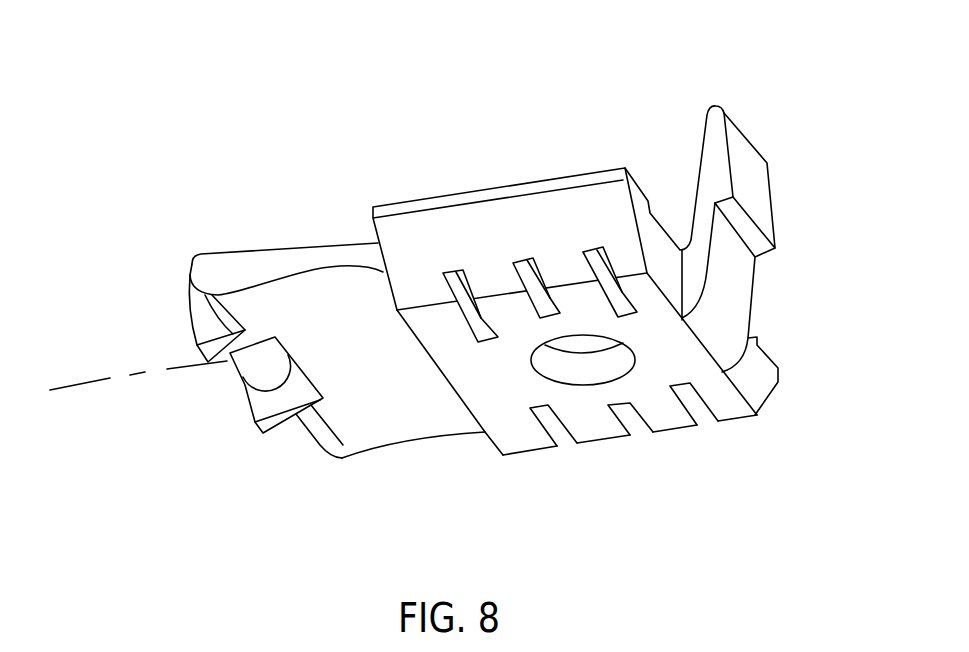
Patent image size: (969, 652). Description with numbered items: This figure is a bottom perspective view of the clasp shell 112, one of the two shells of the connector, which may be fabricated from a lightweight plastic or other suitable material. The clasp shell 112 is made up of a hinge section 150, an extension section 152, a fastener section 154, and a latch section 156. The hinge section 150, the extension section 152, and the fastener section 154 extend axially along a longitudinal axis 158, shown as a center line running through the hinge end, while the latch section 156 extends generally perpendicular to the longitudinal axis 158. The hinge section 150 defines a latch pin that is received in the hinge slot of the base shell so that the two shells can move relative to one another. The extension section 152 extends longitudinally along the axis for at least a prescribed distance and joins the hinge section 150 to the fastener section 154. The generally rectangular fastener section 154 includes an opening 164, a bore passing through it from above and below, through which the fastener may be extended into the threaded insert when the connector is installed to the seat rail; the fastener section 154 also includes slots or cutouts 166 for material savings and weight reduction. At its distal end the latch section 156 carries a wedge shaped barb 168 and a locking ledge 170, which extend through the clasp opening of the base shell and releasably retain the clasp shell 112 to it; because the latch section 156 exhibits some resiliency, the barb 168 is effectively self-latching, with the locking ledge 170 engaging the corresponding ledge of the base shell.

The clasp shell 112 is at (451, 82).
The hinge section 150 is at (188, 296).
The extension section 152 is at (382, 413).
The fastener section 154 is at (577, 215).
The latch section 156 is at (717, 102).
The longitudinal axis 158 is at (82, 383).
The opening 164 is at (583, 372).
The cutouts 166 is at (527, 267).
The barb 168 is at (750, 182).
The locking ledge 170 is at (758, 243).